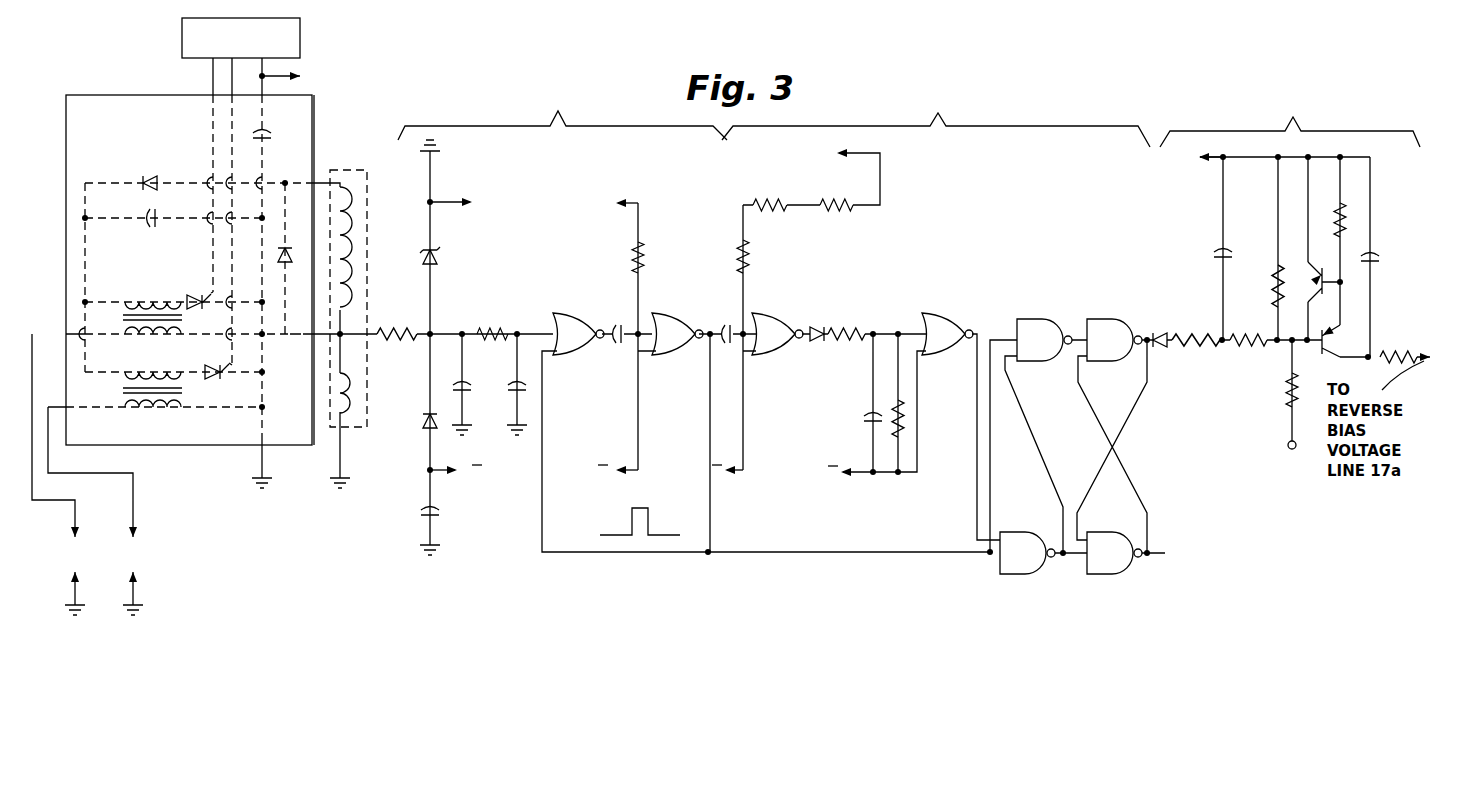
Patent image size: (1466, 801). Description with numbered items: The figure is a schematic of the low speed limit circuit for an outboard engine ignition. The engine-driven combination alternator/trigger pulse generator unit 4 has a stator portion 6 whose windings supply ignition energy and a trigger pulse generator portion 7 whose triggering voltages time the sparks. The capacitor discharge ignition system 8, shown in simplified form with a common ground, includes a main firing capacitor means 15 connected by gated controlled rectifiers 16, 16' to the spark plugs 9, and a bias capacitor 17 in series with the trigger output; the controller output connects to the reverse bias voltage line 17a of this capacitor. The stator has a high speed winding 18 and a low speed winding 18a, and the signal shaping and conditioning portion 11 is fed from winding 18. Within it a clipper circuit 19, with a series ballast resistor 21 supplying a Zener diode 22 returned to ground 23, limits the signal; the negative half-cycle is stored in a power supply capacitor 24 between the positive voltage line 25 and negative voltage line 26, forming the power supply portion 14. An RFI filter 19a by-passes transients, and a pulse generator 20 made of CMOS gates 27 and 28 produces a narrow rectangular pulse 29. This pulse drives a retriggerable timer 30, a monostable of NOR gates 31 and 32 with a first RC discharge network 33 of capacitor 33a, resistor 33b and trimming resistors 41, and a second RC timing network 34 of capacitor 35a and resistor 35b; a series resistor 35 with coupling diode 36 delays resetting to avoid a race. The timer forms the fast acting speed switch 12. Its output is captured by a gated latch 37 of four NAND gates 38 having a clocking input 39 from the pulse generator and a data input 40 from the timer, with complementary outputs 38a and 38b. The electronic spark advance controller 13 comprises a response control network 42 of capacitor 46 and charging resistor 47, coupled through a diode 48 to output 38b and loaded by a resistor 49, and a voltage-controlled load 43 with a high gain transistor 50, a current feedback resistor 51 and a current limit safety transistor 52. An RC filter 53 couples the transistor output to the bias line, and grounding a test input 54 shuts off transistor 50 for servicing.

The combination alternator/trigger pulse generator unit 4 is at (355, 160).
The stator portion 6 is at (360, 181).
The trigger pulse generator portion 7 is at (300, 26).
The capacitor discharge ignition system 8 is at (131, 135).
The spark plugs 9 is at (124, 557).
The signal shaping and conditioning portion 11 is at (562, 112).
The fast acting speed switch 12 is at (936, 118).
The electronic spark advance controller 13 is at (1290, 119).
The power supply portion 14 is at (417, 474).
The main firing capacitor means 15 is at (147, 221).
The gated controlled rectifier 16 is at (168, 295).
The gated controlled rectifier 16' is at (177, 373).
The bias capacitor 17 is at (277, 135).
The reverse bias voltage line 17a is at (302, 74).
The high speed winding 18 is at (348, 390).
The low speed winding 18a is at (348, 218).
The clipper circuit 19 is at (402, 257).
The RFI filter 19a is at (508, 365).
The pulse generator 20 is at (677, 425).
The series ballast resistor 21 is at (389, 330).
The Zener diode 22 is at (440, 258).
The ground 23 is at (440, 147).
The power supply capacitor 24 is at (421, 512).
The positive voltage line 25 is at (458, 207).
The negative voltage line 26 is at (460, 476).
The CMOS gate 27 is at (567, 318).
The CMOS gate 28 is at (665, 316).
The rectangular pulse 29 is at (652, 510).
The retriggerable timer 30 is at (806, 408).
The NOR gate 31 is at (766, 318).
The NOR gate 32 is at (936, 318).
The first RC discharge network 33 is at (711, 280).
The capacitor 33a is at (725, 325).
The resistor 33b is at (752, 262).
The second RC timing network 34 is at (870, 357).
The series resistor 35 is at (842, 328).
The capacitor 35a is at (866, 420).
The resistor 35b is at (905, 412).
The coupling diode 36 is at (815, 344).
The gated latch 37 is at (1078, 450).
The NAND gates 38 is at (1110, 318).
The complementary output 38a is at (1150, 552).
The complement output 38b is at (1146, 337).
The clocking input 39 is at (996, 566).
The data input 40 is at (978, 543).
The trimming resistors 41 is at (818, 204).
The response control network 42 is at (1258, 207).
The voltage-controlled load 43 is at (1334, 187).
The capacitor 46 is at (1216, 252).
The charging resistor 47 is at (1197, 332).
The diode 48 is at (1160, 348).
The resistor 49 is at (1270, 288).
The high gain transistor 50 is at (1329, 354).
The current feedback resistor 51 is at (1346, 232).
The current limit safety transistor 52 is at (1330, 266).
The RC filter 53 is at (1378, 267).
The test input 54 is at (1292, 450).